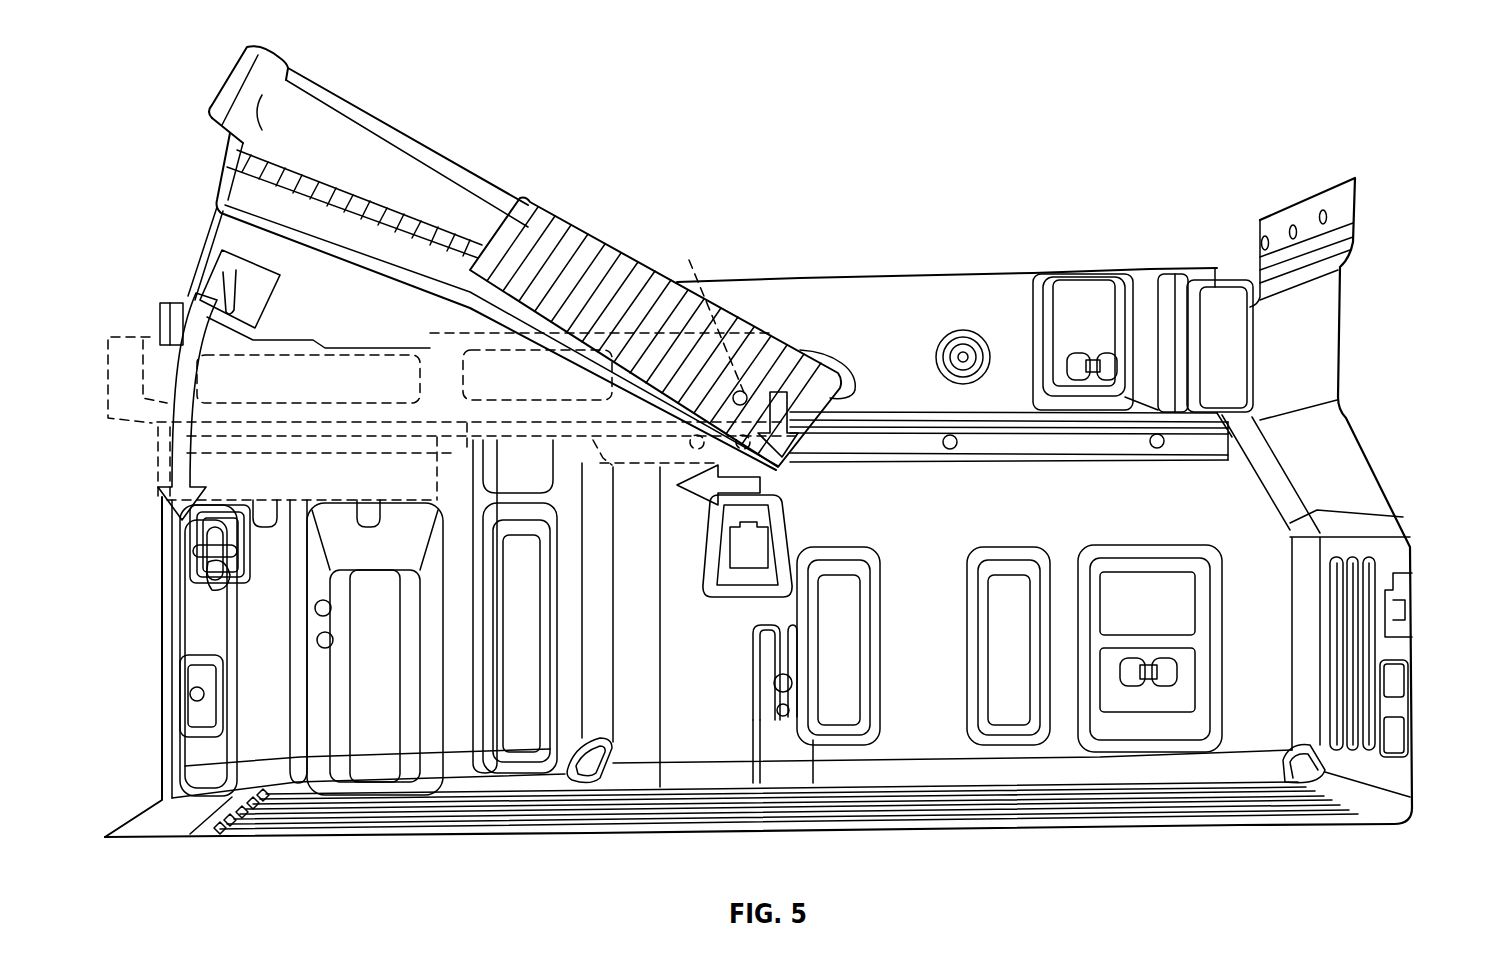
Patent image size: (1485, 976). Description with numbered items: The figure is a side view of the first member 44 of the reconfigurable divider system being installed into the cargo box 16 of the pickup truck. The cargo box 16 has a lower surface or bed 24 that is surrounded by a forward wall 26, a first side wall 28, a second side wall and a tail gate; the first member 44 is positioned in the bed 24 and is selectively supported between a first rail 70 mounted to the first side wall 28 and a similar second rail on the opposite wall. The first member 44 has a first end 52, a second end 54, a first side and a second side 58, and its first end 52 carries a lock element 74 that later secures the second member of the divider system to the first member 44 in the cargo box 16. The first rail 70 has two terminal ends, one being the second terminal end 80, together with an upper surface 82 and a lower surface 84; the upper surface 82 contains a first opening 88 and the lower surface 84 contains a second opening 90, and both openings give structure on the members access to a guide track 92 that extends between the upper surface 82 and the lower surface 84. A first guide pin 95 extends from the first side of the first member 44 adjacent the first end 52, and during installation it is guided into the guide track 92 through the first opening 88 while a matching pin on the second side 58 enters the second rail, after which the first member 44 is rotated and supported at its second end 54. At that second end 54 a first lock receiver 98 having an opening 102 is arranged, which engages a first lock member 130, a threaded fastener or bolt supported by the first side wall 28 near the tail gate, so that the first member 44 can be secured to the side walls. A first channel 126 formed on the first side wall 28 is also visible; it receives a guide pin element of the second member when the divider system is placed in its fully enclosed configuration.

The cargo box 16 is at (1254, 177).
The bed 24 is at (1153, 805).
The forward wall 26 is at (1367, 627).
The first side wall 28 is at (1247, 582).
The first member 44 is at (366, 107).
The first end 52 is at (853, 393).
The second end 54 is at (235, 80).
The second side 58 is at (603, 273).
The first rail 70 is at (1005, 470).
The lock element 74 is at (778, 495).
The second terminal end 80 is at (1258, 437).
The upper surface 82 is at (1033, 427).
The lower surface 84 is at (923, 467).
The first opening 88 is at (915, 427).
The second opening 90 is at (1180, 462).
The guide track 92 is at (1117, 447).
The first guide pin 95 is at (709, 311).
The first lock receiver 98 is at (223, 270).
The opening 102 is at (208, 300).
The first channel 126 is at (778, 713).
The first lock member 130 is at (200, 523).